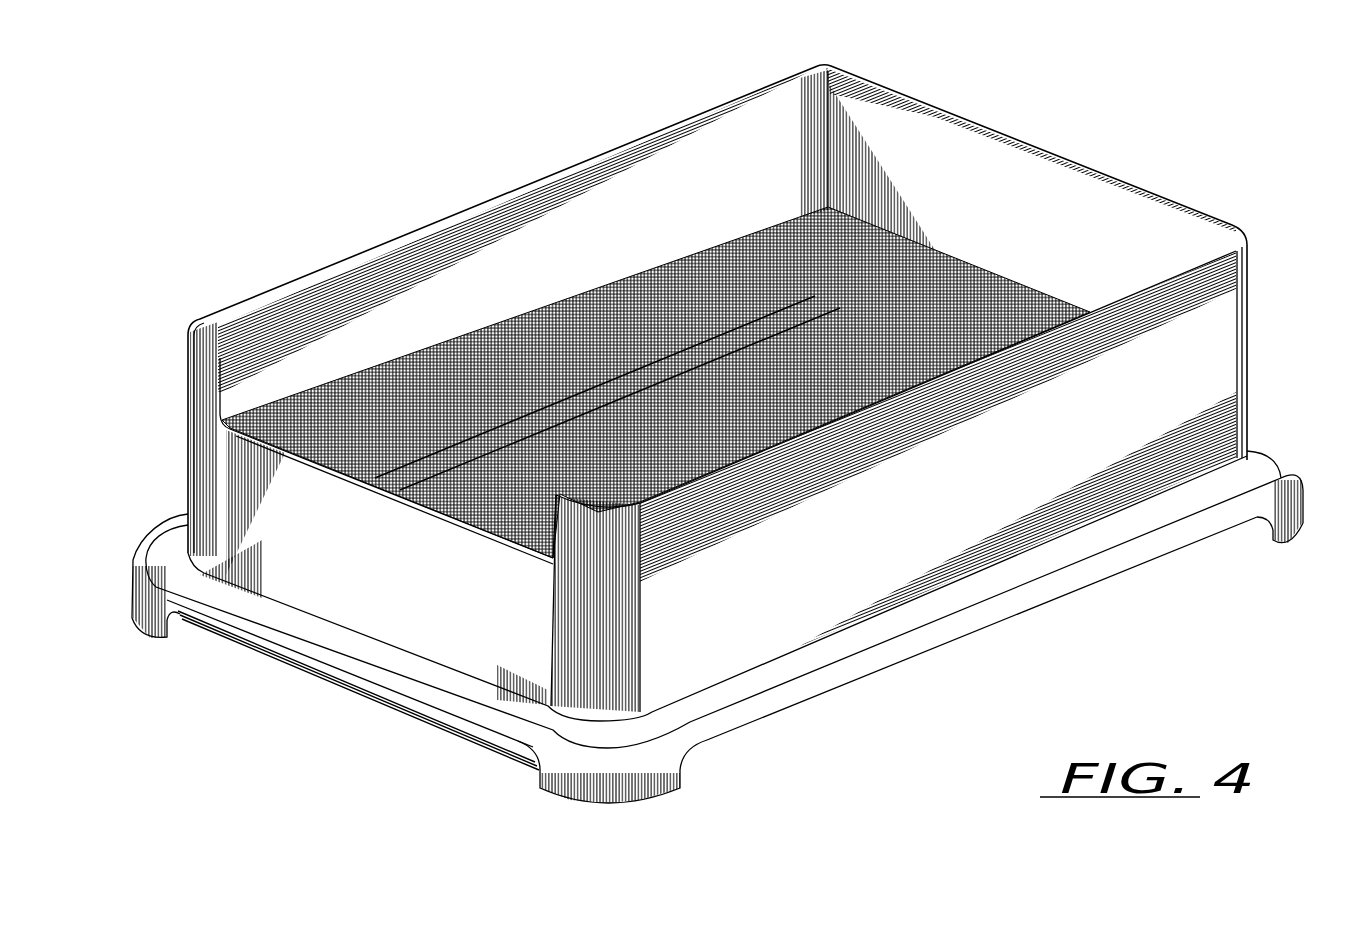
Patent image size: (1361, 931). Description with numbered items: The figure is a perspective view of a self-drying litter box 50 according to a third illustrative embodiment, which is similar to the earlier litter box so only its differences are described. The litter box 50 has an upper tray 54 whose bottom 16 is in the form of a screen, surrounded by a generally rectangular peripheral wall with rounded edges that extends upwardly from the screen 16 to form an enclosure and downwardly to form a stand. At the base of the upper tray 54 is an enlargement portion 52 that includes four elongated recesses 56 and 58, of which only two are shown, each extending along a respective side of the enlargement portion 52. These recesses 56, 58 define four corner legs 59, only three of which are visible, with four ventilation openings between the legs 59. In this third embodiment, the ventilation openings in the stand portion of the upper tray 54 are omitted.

The self-drying litter box 50 is at (1160, 150).
The bottom 16 is at (433, 393).
The upper tray 54 is at (1253, 317).
The enlargement portion 52 is at (1283, 436).
The elongated recess 56 is at (727, 743).
The elongated recess 58 is at (520, 774).
The corner legs 59 is at (613, 778).